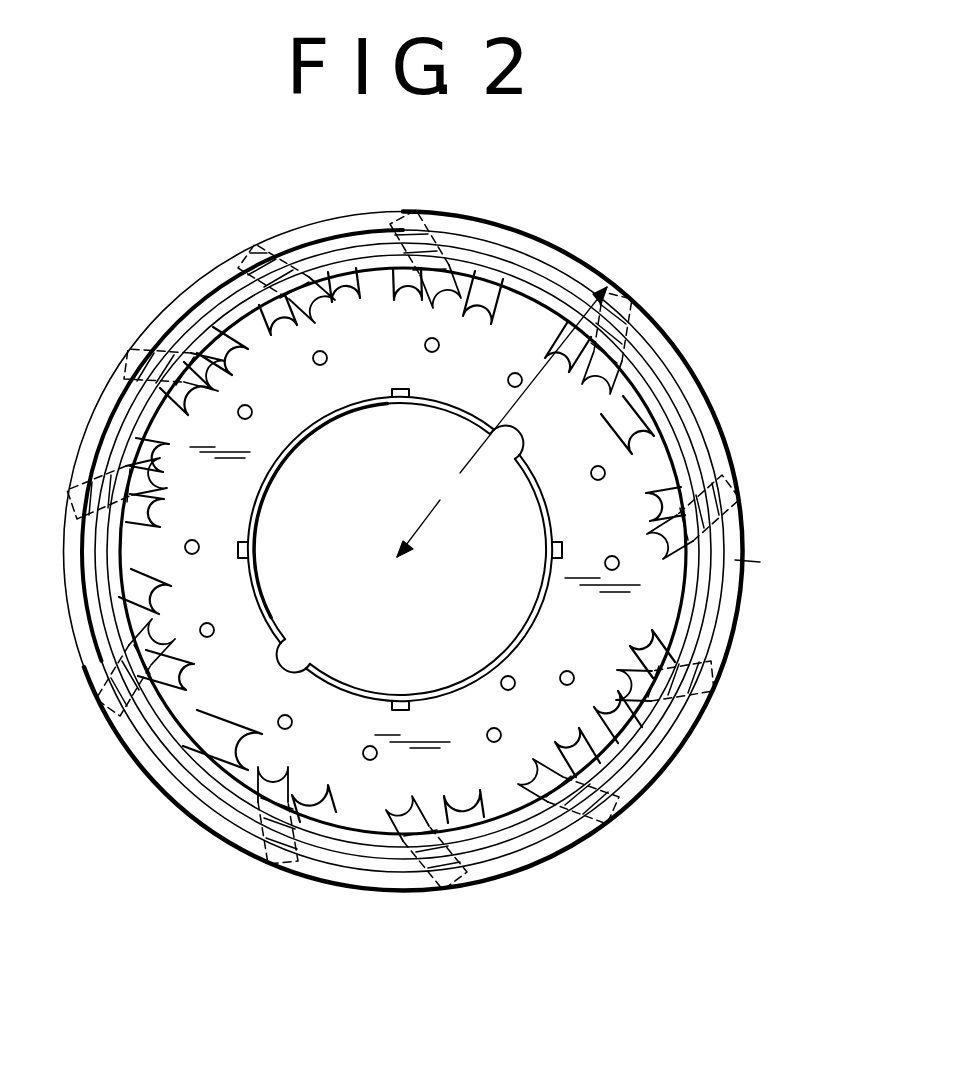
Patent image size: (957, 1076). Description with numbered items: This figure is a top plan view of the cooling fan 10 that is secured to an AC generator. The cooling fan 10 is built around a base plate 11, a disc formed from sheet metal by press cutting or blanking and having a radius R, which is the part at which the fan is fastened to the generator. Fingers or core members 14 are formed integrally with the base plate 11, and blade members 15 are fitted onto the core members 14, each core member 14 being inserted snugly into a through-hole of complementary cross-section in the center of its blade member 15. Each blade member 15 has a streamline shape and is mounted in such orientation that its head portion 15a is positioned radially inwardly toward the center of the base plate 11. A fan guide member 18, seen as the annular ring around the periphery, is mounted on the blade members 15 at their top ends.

The cooling fan 10 is at (697, 367).
The base plate 11 is at (400, 753).
The core member 14 is at (613, 823).
The blade member 15 is at (527, 770).
The head portion 15a is at (553, 740).
The fan guide member 18 is at (733, 533).